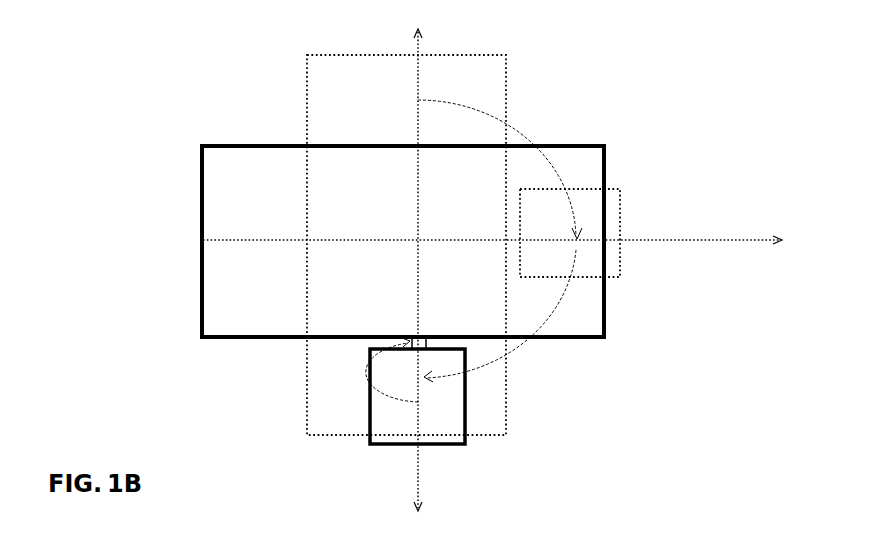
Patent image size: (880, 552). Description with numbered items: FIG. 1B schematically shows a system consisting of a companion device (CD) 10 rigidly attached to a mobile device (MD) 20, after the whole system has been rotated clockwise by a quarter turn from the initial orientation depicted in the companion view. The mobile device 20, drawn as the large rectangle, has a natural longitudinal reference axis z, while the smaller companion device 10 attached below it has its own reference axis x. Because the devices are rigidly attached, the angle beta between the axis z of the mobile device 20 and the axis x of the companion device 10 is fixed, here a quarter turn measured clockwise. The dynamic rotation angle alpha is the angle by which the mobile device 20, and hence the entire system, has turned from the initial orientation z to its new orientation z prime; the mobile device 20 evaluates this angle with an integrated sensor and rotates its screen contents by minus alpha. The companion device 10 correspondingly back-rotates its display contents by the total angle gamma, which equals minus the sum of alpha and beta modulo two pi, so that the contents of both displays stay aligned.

The companion device 10 is at (466, 428).
The mobile device 20 is at (605, 166).
The reference axis z is at (419, 46).
The reference axis x is at (697, 245).